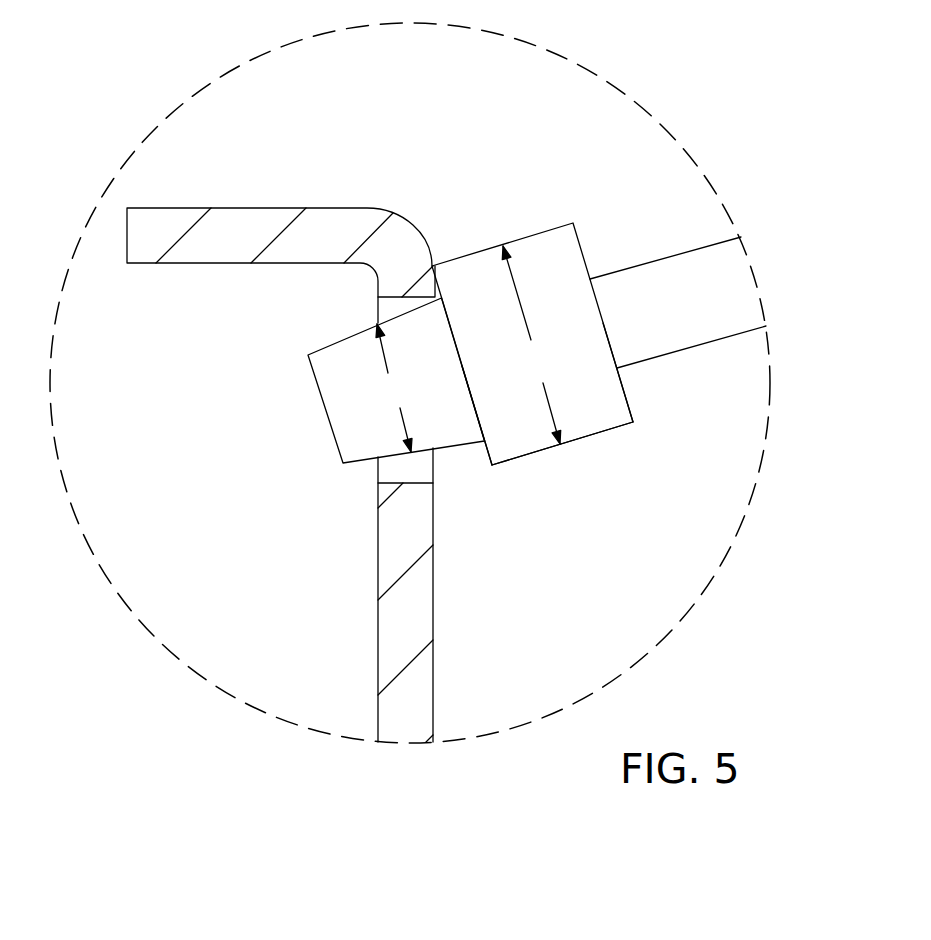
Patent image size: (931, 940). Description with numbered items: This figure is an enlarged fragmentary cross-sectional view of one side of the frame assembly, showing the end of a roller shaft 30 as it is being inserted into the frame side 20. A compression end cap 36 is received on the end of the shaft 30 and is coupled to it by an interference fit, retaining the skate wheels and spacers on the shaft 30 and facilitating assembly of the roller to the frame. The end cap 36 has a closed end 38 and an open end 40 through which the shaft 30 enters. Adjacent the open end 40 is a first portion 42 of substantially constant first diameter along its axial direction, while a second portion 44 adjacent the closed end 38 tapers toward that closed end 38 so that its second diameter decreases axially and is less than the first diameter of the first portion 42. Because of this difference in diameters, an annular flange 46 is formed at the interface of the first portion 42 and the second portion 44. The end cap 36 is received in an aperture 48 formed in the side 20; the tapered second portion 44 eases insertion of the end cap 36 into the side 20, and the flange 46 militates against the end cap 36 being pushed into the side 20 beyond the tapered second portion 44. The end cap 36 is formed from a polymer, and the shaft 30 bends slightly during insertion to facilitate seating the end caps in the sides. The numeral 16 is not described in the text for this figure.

The gasket 16 is at (440, 373).
The side 20 is at (327, 222).
The shaft 30 is at (672, 323).
The compression end cap 36 is at (545, 373).
The closed end 38 is at (326, 410).
The open end 40 is at (627, 398).
The first portion 42 is at (521, 458).
The second portion 44 is at (436, 449).
The annular flange 46 is at (485, 452).
The aperture 48 is at (395, 483).